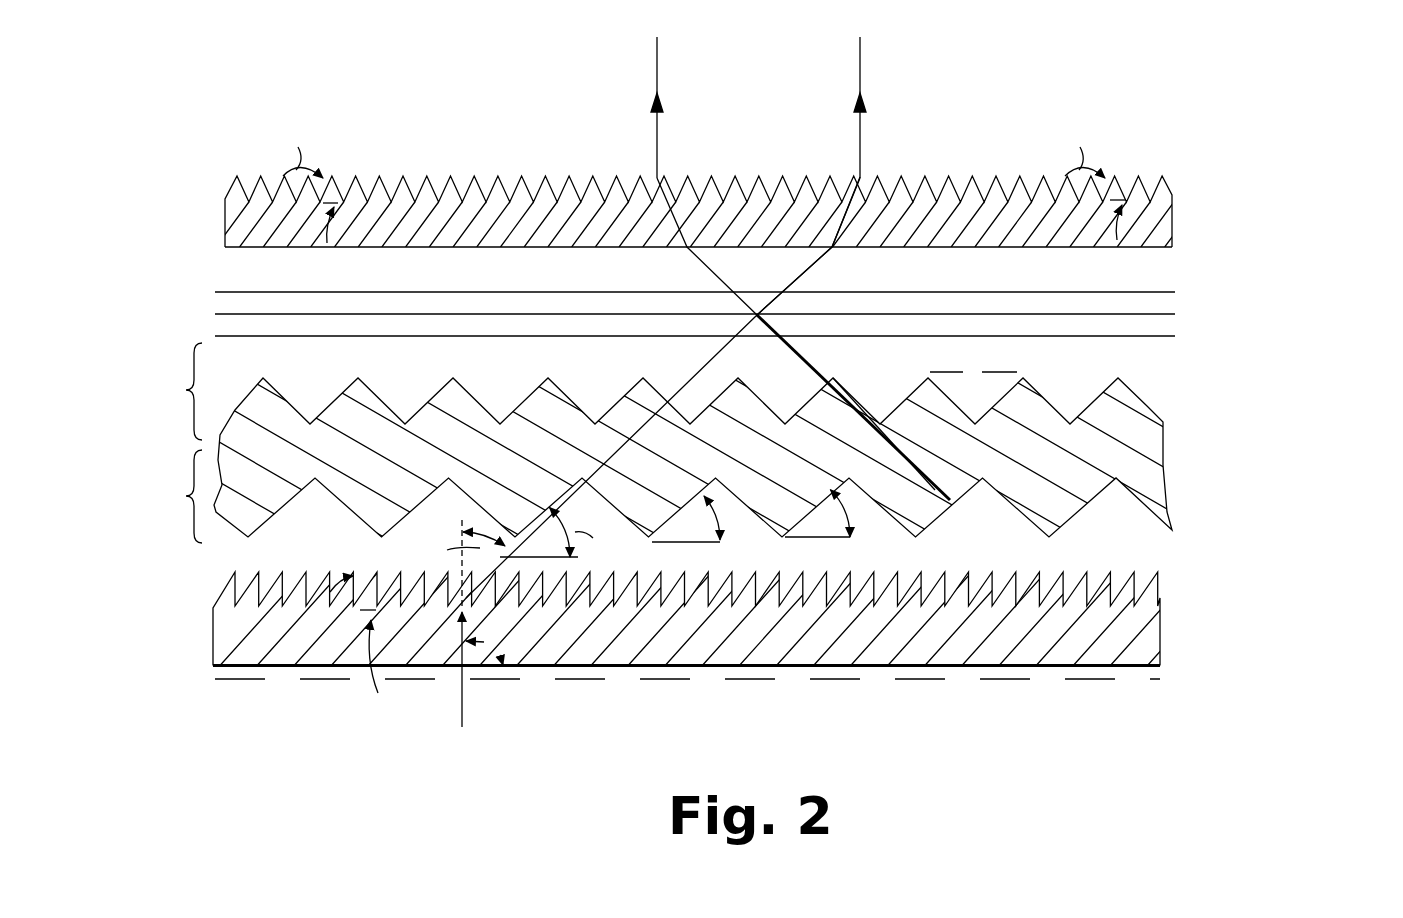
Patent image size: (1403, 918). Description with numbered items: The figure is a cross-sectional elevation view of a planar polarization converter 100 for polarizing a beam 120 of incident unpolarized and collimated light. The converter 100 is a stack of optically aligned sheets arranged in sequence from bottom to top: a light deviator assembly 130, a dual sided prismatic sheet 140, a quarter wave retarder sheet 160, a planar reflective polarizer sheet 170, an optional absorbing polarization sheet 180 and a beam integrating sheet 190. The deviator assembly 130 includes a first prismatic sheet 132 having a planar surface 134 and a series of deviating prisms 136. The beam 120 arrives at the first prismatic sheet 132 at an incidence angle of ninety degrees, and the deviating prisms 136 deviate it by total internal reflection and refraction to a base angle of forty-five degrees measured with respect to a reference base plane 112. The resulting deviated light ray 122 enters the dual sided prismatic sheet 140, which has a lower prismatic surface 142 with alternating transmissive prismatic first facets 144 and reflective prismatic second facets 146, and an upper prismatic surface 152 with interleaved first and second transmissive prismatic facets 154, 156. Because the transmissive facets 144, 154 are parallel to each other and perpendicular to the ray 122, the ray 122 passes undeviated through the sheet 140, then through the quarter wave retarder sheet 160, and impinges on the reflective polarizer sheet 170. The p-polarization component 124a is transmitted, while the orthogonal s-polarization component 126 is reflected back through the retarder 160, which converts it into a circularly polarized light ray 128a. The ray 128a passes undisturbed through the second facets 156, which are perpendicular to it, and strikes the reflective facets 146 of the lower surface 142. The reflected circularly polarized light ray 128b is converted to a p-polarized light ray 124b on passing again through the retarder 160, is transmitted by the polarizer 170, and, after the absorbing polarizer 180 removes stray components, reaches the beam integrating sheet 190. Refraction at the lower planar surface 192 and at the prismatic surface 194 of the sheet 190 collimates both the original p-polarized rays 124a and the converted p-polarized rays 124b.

The planar polarization converter 100 is at (1262, 404).
The reference base plane 112 is at (245, 683).
The beam of incident unpolarized and collimated light 120 is at (463, 703).
The deviated light ray 122 is at (704, 368).
The p-polarization component 124a is at (860, 62).
The p-polarized light ray 124b is at (657, 62).
The s-polarization orthogonal component 126 is at (761, 327).
The circularly polarized light ray 128a is at (812, 365).
The reflected circularly polarized light ray 128b is at (815, 372).
The light deviator assembly 130 is at (1223, 558).
The first prismatic sheet 132 is at (850, 650).
The planar surface 134 is at (991, 672).
The deviating prisms 136 is at (1136, 667).
The dual sided prismatic sheet 140 is at (1223, 376).
The lower prismatic surface 142 is at (166, 496).
The transmissive prismatic first facets 144 is at (283, 398).
The reflective prismatic second facets 146 is at (292, 500).
The upper prismatic surface 152 is at (166, 391).
The first transmissive prismatic facets 154 is at (572, 400).
The second transmissive prismatic facets 156 is at (442, 390).
The quarter wave retarder sheet 160 is at (1175, 335).
The planar reflective polarizer sheet 170 is at (1175, 313).
The absorbing polarization sheet 180 is at (1175, 291).
The beam integrating sheet 190 is at (1157, 232).
The lower planar surface 192 is at (988, 249).
The prismatic surface 194 is at (903, 180).